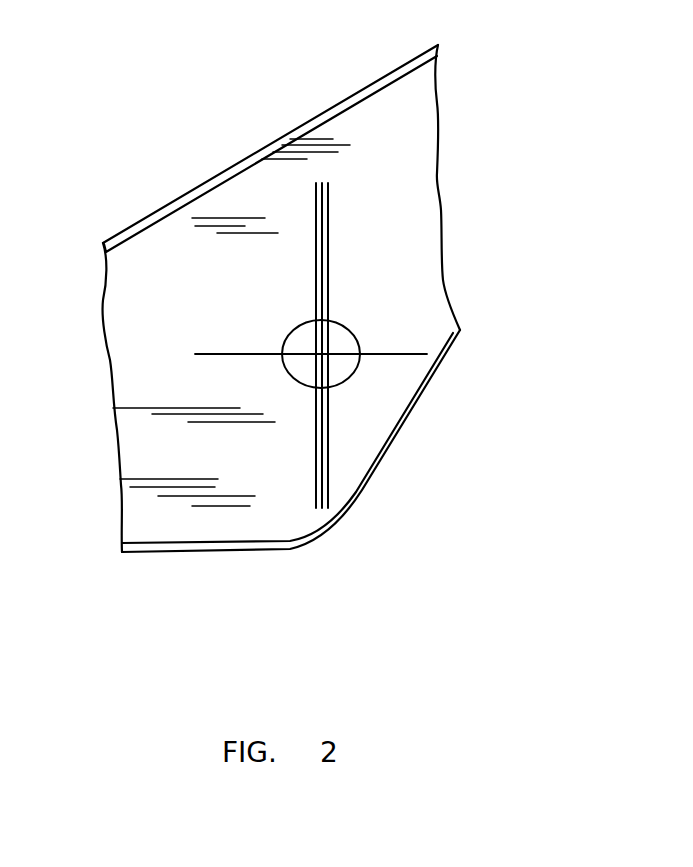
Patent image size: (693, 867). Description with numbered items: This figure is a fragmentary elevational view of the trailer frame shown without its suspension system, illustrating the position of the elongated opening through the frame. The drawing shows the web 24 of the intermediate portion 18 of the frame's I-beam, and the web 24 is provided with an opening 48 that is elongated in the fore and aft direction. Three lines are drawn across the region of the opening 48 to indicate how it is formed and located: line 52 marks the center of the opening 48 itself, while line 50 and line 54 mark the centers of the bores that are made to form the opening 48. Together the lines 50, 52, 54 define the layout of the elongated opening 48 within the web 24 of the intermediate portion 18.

The intermediate portion 18 is at (385, 133).
The web 24 is at (170, 240).
The opening 48 is at (356, 370).
The line 50 is at (317, 272).
The line 52 is at (323, 246).
The line 54 is at (329, 217).